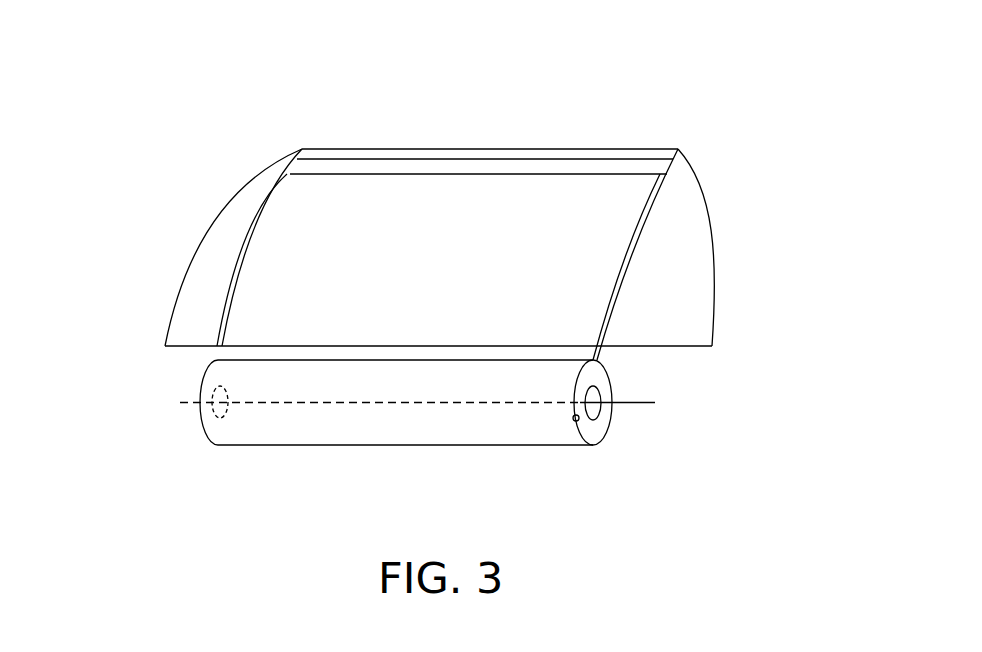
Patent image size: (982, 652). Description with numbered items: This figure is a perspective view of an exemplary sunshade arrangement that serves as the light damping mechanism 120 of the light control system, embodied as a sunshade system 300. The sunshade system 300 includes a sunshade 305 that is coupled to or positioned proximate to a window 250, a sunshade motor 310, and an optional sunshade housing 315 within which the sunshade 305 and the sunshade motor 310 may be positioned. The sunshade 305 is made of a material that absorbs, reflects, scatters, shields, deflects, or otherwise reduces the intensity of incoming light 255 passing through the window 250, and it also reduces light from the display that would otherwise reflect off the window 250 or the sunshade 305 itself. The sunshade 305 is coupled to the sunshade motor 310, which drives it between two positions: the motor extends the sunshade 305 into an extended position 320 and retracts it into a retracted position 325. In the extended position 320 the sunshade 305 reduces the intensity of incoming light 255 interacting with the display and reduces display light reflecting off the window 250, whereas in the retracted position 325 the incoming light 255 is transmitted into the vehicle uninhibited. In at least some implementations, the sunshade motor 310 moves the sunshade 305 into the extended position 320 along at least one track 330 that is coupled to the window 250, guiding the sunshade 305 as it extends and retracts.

The sunshade system 300 is at (686, 80).
The window 250 is at (712, 227).
The incoming light 255 is at (408, 228).
The extended position 320 is at (655, 158).
The track 330 is at (298, 157).
The sunshade 305 is at (625, 253).
The retracted position 325 is at (218, 348).
The light damping mechanism 120 is at (287, 453).
The sunshade motor 310 is at (600, 387).
The sunshade housing 315 is at (602, 440).